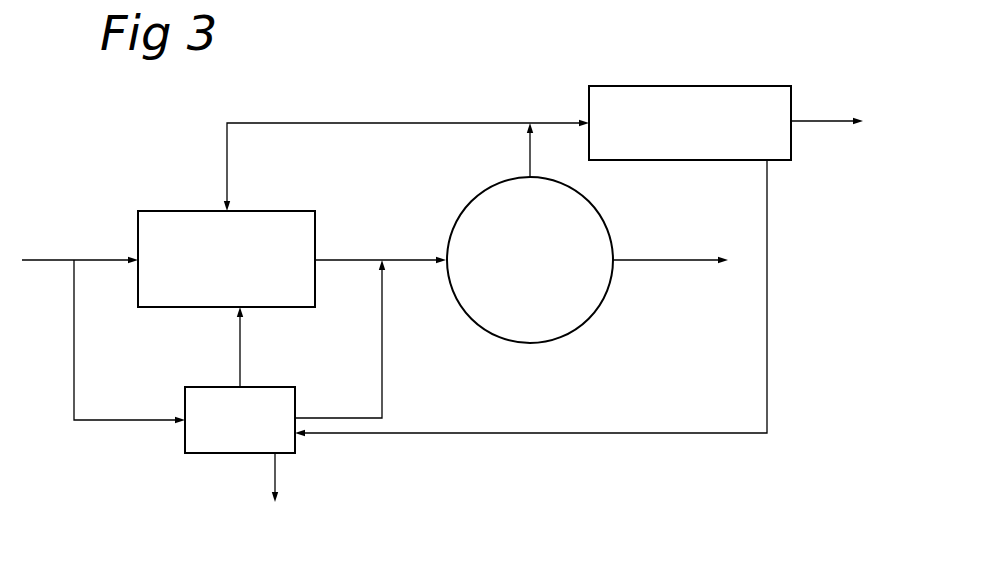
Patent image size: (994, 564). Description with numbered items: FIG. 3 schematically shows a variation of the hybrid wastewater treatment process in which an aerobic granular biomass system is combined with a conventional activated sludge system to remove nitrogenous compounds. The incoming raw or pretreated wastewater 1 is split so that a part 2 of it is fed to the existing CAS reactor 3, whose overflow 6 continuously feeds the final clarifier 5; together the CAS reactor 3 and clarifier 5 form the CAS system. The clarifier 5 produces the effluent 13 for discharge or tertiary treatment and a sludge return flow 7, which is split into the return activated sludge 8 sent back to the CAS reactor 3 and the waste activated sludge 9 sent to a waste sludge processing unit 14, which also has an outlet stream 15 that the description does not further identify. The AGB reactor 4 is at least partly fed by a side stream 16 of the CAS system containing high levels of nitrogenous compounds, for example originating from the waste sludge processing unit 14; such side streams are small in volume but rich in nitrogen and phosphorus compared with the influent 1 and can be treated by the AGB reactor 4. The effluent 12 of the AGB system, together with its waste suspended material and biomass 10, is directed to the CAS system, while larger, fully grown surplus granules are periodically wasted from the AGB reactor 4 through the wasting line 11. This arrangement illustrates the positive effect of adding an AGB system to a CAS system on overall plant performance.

The incoming wastewater 1 is at (58, 259).
The part of the incoming wastewater 2 is at (127, 421).
The CAS reactor 3 is at (202, 252).
The AGB reactor 4 is at (254, 417).
The final clarifier 5 is at (521, 267).
The overflow from the CAS reactor 6 is at (400, 259).
The sludge return flow 7 is at (530, 150).
The RAS 8 is at (256, 122).
The WAS 9 is at (556, 122).
The waste suspended material 10 is at (240, 354).
The surplus granules wasting 11 is at (275, 473).
The AGB effluent 12 is at (382, 391).
The effluent from the final clarifier 13 is at (660, 260).
The waste sludge processing unit 14 is at (688, 110).
The final product stream 15 is at (822, 120).
The side stream 16 is at (568, 434).